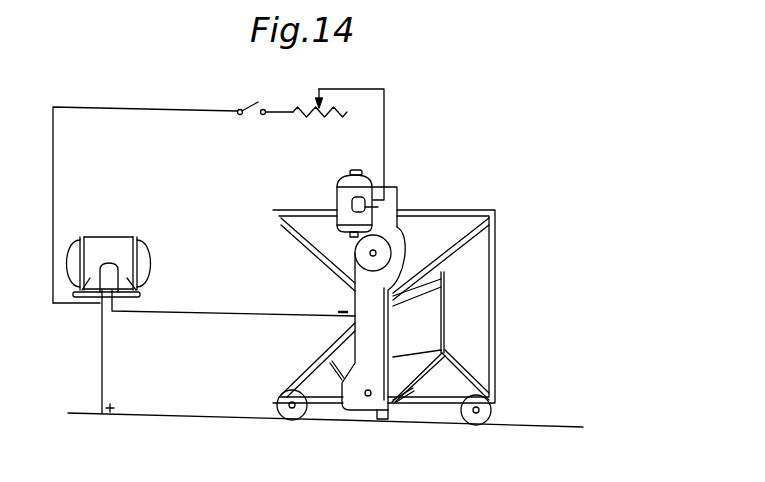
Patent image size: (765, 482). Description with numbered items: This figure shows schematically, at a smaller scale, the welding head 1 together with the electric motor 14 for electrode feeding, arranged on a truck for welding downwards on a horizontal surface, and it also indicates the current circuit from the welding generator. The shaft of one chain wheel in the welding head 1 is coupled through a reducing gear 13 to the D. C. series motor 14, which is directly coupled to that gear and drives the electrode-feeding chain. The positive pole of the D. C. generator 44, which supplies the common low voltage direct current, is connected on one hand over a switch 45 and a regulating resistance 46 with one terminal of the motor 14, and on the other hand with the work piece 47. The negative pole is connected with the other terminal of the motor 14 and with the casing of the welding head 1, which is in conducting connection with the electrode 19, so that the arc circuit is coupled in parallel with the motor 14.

The welding head 1 is at (380, 283).
The reducing gear 13 is at (357, 253).
The electric driving motor 14 is at (338, 187).
The electrode 19 is at (383, 420).
The D. C. generator 44 is at (108, 240).
The switch 45 is at (247, 105).
The regulating resistance 46 is at (310, 114).
The work piece 47 is at (203, 417).